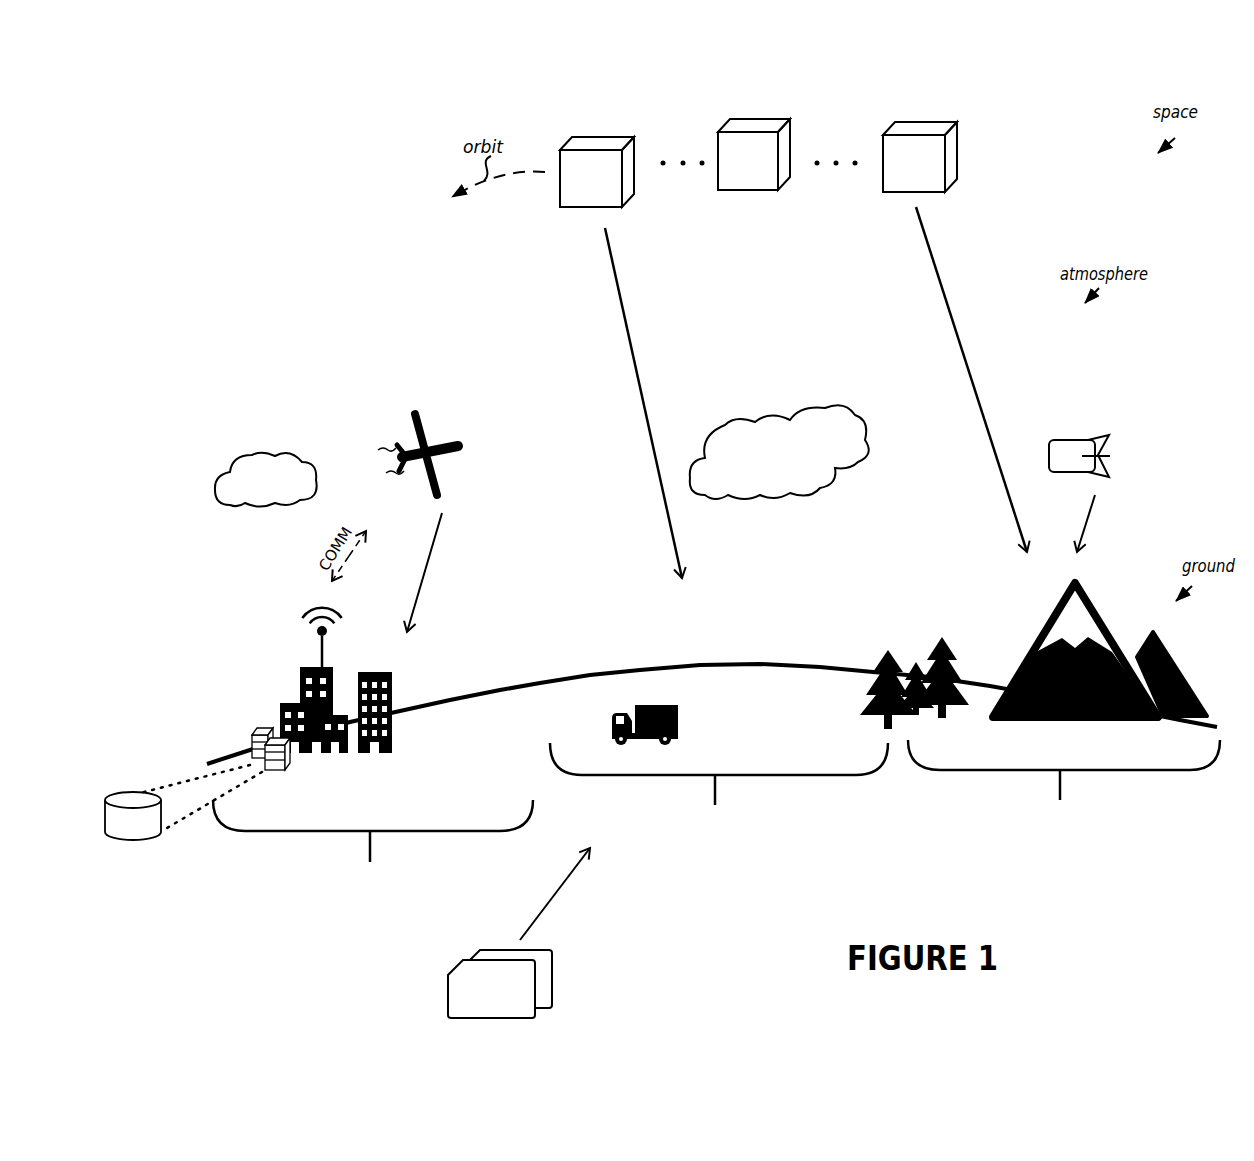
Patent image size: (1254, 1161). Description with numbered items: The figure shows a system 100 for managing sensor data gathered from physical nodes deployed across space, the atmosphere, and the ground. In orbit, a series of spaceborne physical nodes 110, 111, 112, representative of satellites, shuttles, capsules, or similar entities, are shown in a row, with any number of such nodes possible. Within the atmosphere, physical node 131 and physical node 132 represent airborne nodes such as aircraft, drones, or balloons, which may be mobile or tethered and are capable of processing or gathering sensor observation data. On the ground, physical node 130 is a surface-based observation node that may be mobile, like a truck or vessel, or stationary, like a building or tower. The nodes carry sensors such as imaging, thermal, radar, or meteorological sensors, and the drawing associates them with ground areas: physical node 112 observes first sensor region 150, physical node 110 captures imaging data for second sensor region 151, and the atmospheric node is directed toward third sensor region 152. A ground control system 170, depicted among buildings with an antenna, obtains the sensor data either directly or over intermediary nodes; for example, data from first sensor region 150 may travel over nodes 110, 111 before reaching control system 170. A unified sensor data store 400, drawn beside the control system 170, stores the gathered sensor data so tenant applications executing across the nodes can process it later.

The system 100 is at (110, 175).
The physical node 110 is at (610, 191).
The physical node 111 is at (765, 173).
The physical node 112 is at (932, 174).
The physical node 130 is at (508, 1011).
The physical node 131 is at (1103, 421).
The physical node 132 is at (448, 439).
The first sensor region 150 is at (922, 371).
The second sensor region 151 is at (745, 367).
The third sensor region 152 is at (538, 585).
The control system 170 is at (388, 806).
The sensor data store 400 is at (148, 833).